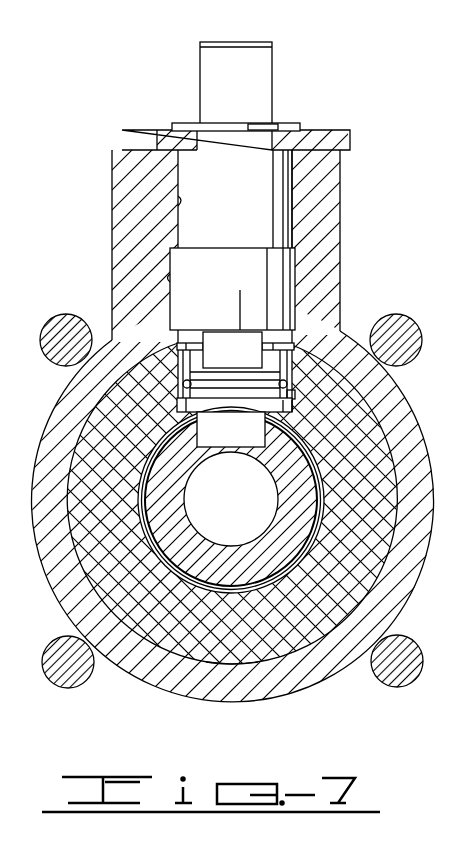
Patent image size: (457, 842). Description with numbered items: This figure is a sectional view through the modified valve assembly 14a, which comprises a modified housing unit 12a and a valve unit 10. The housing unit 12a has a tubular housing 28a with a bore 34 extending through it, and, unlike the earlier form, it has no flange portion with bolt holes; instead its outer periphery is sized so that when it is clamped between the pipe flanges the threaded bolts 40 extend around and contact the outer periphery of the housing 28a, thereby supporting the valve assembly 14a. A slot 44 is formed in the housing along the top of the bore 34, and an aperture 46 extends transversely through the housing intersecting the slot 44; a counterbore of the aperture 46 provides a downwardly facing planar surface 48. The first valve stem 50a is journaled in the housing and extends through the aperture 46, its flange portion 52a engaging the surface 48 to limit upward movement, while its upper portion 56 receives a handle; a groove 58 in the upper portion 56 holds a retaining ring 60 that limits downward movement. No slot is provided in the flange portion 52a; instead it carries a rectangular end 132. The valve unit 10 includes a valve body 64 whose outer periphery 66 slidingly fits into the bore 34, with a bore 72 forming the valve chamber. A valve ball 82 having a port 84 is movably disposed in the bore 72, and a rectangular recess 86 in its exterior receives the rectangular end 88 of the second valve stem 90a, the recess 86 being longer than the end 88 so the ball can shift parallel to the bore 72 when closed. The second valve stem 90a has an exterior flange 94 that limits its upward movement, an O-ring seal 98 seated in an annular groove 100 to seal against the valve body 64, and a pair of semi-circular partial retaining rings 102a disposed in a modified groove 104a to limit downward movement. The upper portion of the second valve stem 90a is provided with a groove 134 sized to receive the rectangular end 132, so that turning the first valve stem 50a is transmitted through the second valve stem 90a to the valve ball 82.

The valve unit 10 is at (396, 442).
The modified housing unit 12a is at (350, 258).
The modified valve assembly 14a is at (372, 156).
The housing 28a is at (330, 193).
The bore 34 is at (228, 656).
The threaded bolts 40 is at (58, 318).
The slot 44 is at (168, 278).
The aperture 46 is at (176, 212).
The planar surface 48 is at (298, 250).
The first valve stem 50a is at (242, 177).
The flange portion 52a is at (246, 271).
The upper portion 56 is at (273, 71).
The groove 58 is at (262, 124).
The retaining ring 60 is at (182, 124).
The valve body 64 is at (97, 568).
The outer periphery 66 is at (70, 500).
The bore 72 is at (324, 508).
The valve ball 82 is at (290, 572).
The port 84 is at (244, 521).
The rectangular recess 86 is at (198, 456).
The rectangular end 88 is at (244, 434).
The second valve stem 90a is at (290, 368).
The exterior flange 94 is at (180, 407).
The O-ring seal 98 is at (182, 381).
The annular groove 100 is at (293, 412).
The partial retaining rings 102a is at (176, 345).
The modified groove 104a is at (188, 342).
The rectangular end 132 is at (246, 354).
The groove 134 is at (294, 394).